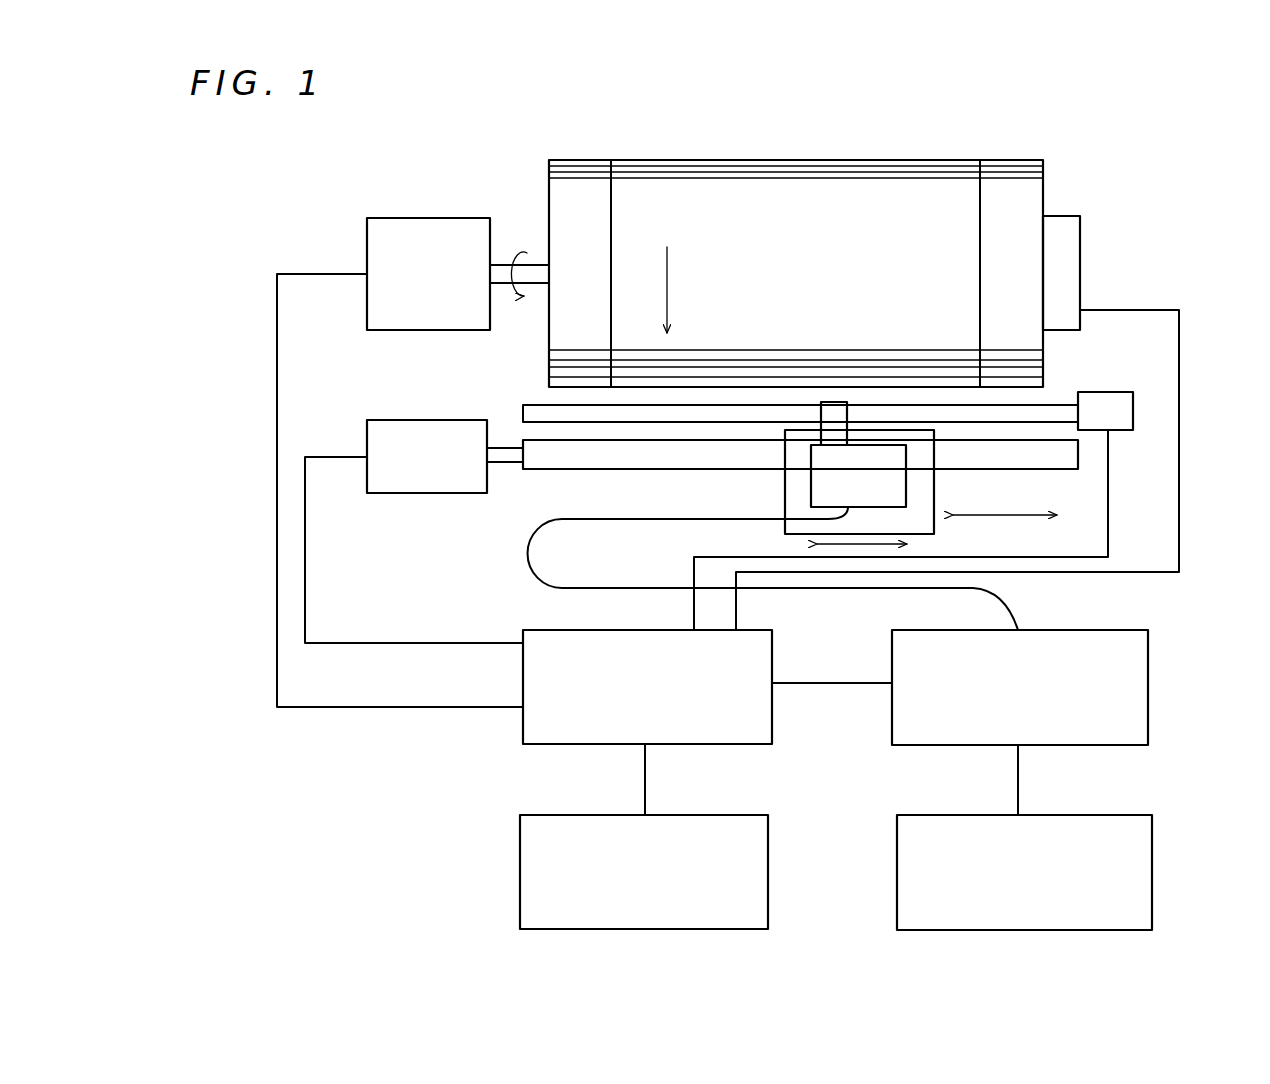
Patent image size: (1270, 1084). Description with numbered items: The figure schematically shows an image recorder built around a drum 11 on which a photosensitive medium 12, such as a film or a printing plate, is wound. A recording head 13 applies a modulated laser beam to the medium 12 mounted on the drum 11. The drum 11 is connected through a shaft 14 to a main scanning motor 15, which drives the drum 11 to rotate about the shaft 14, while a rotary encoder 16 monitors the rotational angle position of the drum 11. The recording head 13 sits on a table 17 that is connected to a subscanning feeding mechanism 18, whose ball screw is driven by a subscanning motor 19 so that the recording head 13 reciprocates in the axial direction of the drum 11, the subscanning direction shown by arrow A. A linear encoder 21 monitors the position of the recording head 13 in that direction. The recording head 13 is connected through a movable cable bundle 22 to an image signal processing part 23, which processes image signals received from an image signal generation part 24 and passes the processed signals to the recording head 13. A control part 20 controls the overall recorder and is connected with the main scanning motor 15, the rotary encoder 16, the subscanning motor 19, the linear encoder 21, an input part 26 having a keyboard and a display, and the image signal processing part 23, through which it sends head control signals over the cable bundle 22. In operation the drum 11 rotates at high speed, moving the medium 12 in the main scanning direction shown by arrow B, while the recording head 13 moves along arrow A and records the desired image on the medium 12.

The drum 11 is at (567, 185).
The photosensitive medium 12 is at (870, 193).
The recording head 13 is at (893, 490).
The shaft 14 is at (517, 296).
The main scanning motor 15 is at (418, 228).
The rotary encoder 16 is at (1067, 237).
The table 17 is at (790, 500).
The subscanning feeding mechanism 18 is at (545, 460).
The subscanning motor 19 is at (400, 480).
The control part 20 is at (515, 727).
The linear encoder 21 is at (1115, 393).
The movable cable bundle 22 is at (528, 573).
The image signal processing part 23 is at (1148, 708).
The image signal generation part 24 is at (1152, 868).
The input part 26 is at (520, 892).
The subscanning direction A is at (1027, 512).
The main scanning direction B is at (668, 275).